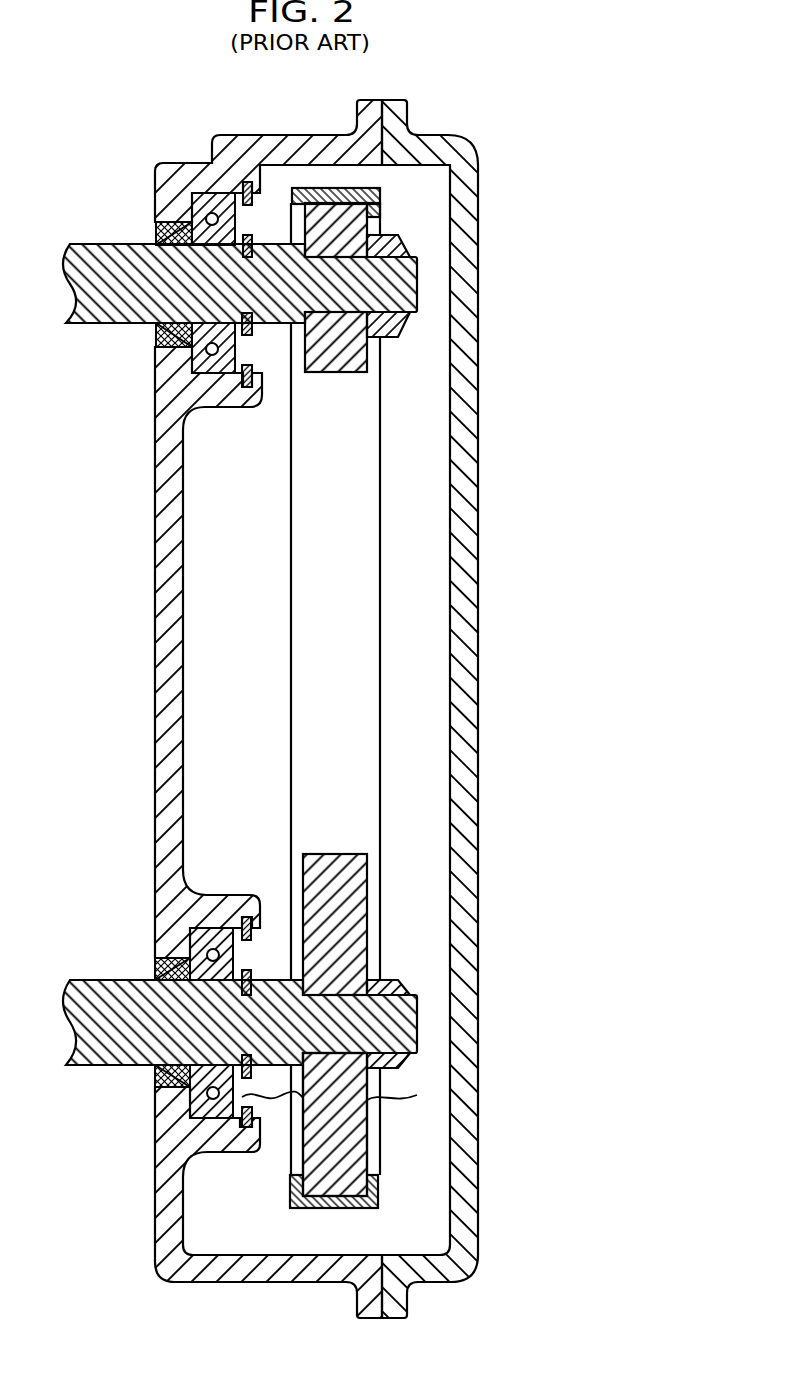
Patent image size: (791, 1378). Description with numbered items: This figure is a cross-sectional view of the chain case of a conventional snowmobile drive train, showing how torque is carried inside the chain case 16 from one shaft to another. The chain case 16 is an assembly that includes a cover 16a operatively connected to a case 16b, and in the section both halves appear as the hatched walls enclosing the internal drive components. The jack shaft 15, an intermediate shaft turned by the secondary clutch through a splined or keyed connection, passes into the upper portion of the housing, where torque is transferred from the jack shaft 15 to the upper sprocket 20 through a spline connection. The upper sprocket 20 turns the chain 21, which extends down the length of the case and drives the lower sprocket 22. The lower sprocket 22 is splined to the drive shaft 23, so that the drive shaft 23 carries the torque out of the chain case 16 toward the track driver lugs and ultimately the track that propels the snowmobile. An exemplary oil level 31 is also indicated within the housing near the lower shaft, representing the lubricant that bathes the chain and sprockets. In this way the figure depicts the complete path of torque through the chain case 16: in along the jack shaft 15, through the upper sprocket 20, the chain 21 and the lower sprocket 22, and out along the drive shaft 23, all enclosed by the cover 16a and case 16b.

The jack shaft 15 is at (420, 293).
The chain case 16 is at (377, 709).
The cover 16a is at (478, 537).
The case 16b is at (185, 712).
The upper sprocket 20 is at (368, 368).
The chain 21 is at (380, 635).
The lower sprocket 22 is at (367, 1125).
The drive shaft 23 is at (417, 1022).
The oil level 31 is at (417, 1095).